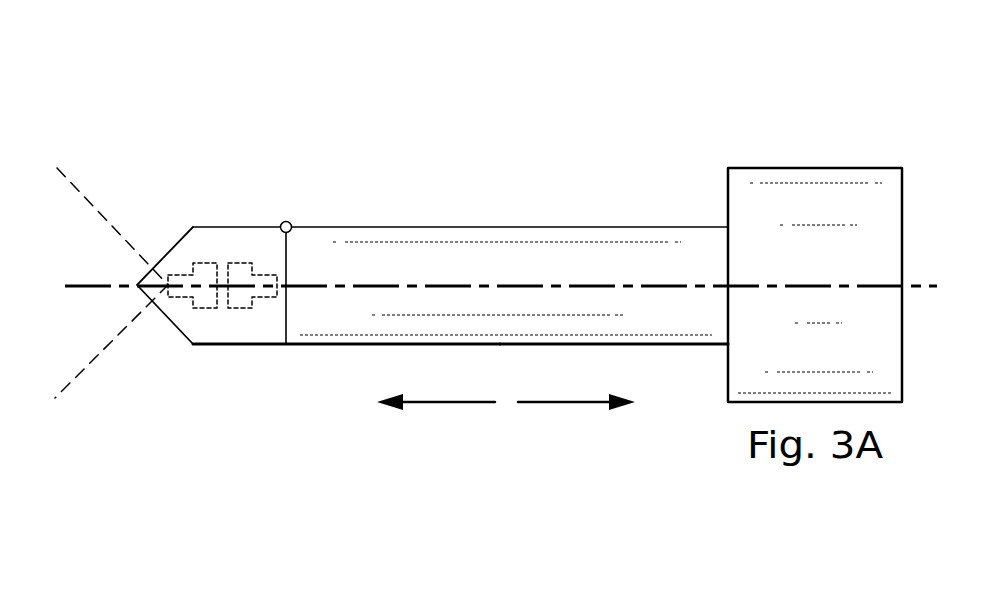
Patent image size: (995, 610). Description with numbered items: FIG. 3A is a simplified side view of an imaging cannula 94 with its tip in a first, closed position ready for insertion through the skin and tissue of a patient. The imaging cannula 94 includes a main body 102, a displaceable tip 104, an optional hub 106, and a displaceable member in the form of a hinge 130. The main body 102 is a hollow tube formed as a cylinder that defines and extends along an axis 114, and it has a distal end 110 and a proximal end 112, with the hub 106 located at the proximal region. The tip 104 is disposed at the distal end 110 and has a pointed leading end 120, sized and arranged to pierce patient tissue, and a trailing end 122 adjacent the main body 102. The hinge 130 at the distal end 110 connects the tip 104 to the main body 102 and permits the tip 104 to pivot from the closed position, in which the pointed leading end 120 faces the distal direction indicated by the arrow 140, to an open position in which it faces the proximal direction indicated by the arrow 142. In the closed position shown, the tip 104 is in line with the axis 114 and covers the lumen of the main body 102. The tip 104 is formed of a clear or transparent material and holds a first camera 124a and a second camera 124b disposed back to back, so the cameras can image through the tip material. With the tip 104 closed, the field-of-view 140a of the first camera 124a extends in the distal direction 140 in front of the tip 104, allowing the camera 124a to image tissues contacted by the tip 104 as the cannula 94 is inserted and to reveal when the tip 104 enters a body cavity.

The imaging cannula 94 is at (277, 60).
The main body 102 is at (512, 218).
The displaceable tip 104 is at (214, 218).
The hub 106 is at (816, 168).
The distal end 110 is at (306, 364).
The proximal end 112 is at (708, 366).
The axis 114 is at (80, 285).
The pointed leading end 120 is at (168, 250).
The trailing end 122 is at (288, 247).
The first camera 124a is at (198, 309).
The second camera 124b is at (248, 309).
The hinge 130 is at (283, 221).
The distal direction 140 is at (450, 405).
The field-of-view 140a is at (104, 352).
The proximal direction 142 is at (565, 405).